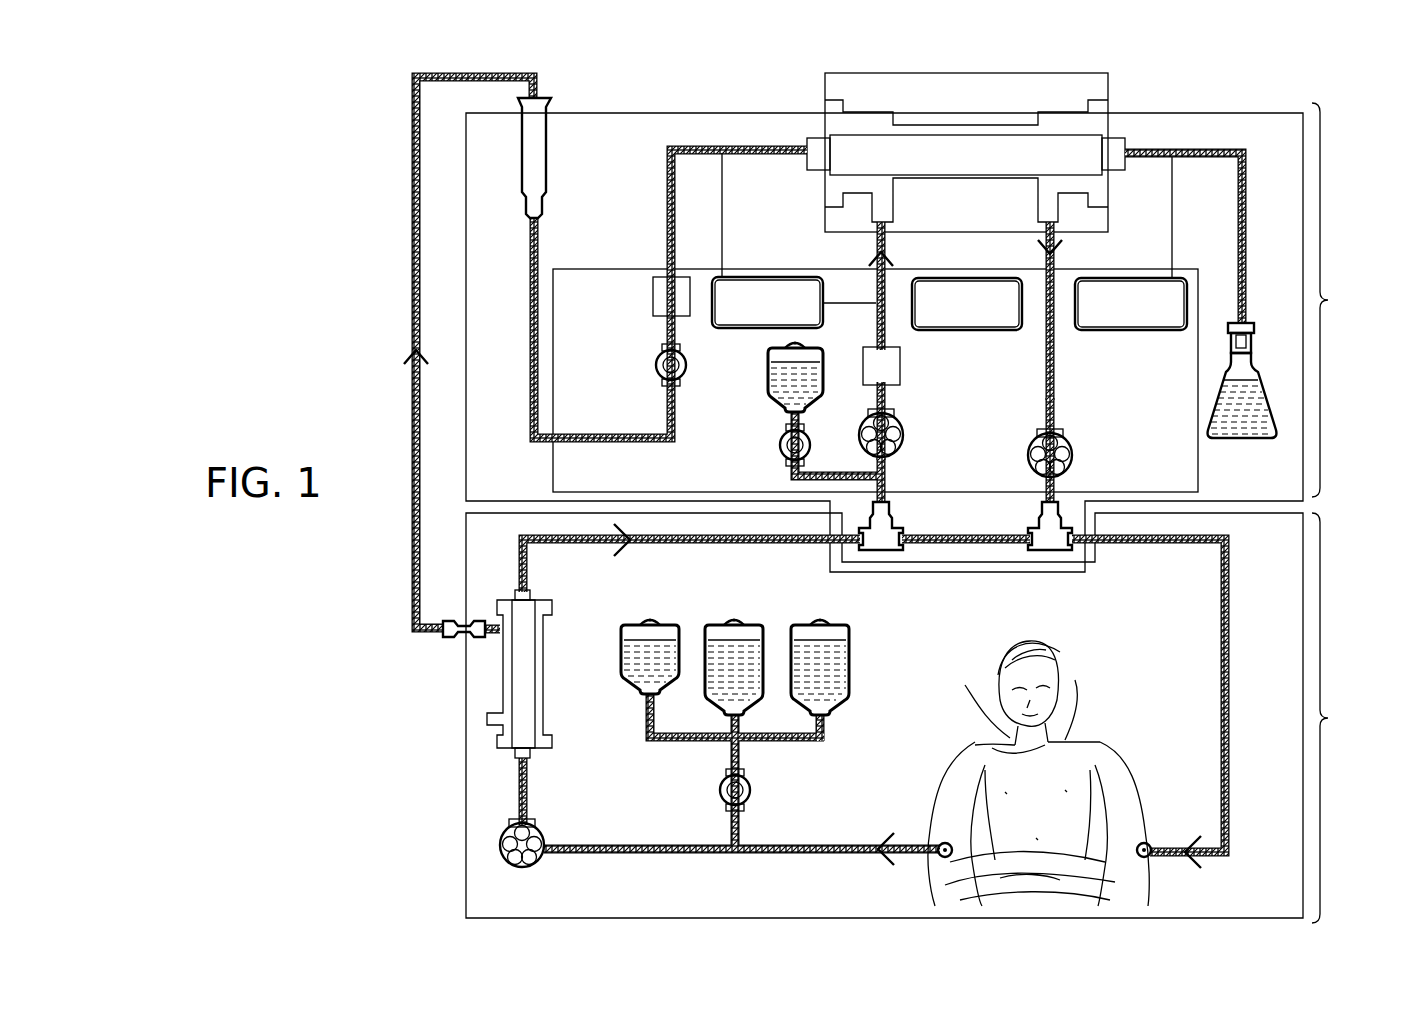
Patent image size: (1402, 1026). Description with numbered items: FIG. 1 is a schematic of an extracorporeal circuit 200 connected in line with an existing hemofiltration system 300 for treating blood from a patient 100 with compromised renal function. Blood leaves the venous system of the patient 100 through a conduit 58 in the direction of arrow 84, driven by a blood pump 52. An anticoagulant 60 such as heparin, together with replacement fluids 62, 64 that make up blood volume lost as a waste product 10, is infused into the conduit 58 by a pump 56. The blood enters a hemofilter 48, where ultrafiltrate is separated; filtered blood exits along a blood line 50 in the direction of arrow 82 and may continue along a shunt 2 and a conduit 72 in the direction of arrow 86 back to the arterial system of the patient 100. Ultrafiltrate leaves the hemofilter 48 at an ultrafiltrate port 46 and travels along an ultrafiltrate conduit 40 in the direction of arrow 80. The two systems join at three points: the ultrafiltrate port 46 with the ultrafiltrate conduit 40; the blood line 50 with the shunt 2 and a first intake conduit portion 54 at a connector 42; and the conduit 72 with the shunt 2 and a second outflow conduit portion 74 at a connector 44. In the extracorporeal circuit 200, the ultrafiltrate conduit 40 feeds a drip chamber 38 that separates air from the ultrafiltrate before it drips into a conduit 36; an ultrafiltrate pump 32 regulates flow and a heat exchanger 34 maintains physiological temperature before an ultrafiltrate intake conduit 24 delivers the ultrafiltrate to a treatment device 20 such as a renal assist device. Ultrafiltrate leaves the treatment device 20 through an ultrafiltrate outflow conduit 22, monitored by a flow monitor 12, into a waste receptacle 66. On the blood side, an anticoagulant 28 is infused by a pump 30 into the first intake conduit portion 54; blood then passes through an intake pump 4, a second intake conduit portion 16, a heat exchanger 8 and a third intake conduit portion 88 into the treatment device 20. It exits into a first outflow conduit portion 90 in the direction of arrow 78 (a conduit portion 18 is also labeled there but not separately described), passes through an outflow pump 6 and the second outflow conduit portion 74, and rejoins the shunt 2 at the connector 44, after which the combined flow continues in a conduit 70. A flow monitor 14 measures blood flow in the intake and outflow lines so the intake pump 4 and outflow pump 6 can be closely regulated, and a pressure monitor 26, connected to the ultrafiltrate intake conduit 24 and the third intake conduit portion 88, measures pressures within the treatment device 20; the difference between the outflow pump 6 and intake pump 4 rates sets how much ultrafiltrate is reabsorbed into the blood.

The shunt 2 is at (967, 535).
The intake pump 4 is at (904, 435).
The outflow pump 6 is at (1074, 455).
The heat exchanger 8 is at (902, 366).
The waste product 10 is at (1210, 428).
The flow monitor 12 is at (1132, 332).
The flow monitor 14 is at (1000, 332).
The second intake conduit portion 16 is at (889, 397).
The fluid line 18 is at (1043, 406).
The treatment device 20 is at (1003, 73).
The ultrafiltrate outflow conduit 22 is at (1218, 150).
The ultrafiltrate intake conduit 24 is at (708, 150).
The pressure monitor 26 is at (735, 330).
The anticoagulant 28 is at (778, 402).
The pump 30 is at (778, 446).
The ultrafiltrate pump 32 is at (656, 366).
The heat exchanger 34 is at (652, 297).
The conduit 36 is at (528, 362).
The drip chamber 38 is at (548, 181).
The ultrafiltrate conduit 40 is at (410, 300).
The connector 42 is at (893, 516).
The connector 44 is at (1031, 516).
The ultrafiltrate port 46 is at (448, 640).
The hemofilter 48 is at (487, 718).
The blood line 50 is at (710, 546).
The blood pump 52 is at (542, 828).
The first intake conduit portion 54 is at (891, 490).
The pump 56 is at (752, 790).
The conduit 58 is at (830, 857).
The anticoagulant 60 is at (655, 652).
The replacement fluid 62 is at (740, 652).
The replacement fluid 64 is at (828, 652).
The waste receptacle 66 is at (1253, 363).
The conduit 70 is at (1152, 548).
The conduit 72 is at (1220, 648).
The second outflow conduit portion 74 is at (1058, 490).
The flow direction indicator 78 is at (1063, 252).
The flow direction indicator 80 is at (402, 358).
The flow direction indicator 82 is at (630, 546).
The flow direction indicator 84 is at (886, 835).
The flow direction indicator 86 is at (1194, 836).
The third intake conduit portion 88 is at (876, 331).
The first outflow conduit portion 90 is at (1057, 410).
The patient 100 is at (1038, 654).
The extracorporeal circuit 200 is at (1386, 315).
The hemofiltration system 300 is at (1386, 733).